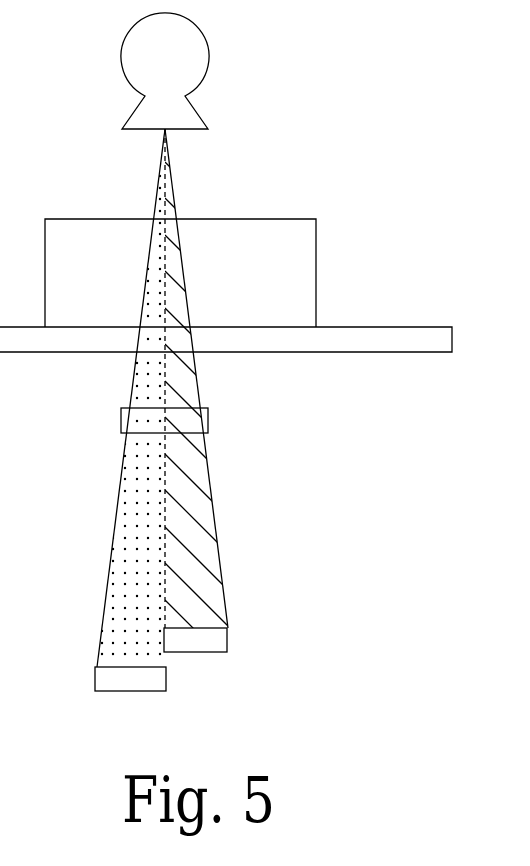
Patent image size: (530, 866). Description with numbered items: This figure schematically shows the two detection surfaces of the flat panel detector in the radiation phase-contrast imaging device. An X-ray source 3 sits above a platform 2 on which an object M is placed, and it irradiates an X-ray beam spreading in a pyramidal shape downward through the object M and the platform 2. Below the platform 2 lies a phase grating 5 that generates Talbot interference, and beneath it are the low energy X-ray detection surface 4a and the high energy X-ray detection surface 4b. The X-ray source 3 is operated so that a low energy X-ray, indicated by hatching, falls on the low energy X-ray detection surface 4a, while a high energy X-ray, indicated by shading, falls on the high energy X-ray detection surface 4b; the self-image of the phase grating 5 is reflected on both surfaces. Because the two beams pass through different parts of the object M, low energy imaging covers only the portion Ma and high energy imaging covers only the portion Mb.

The X-ray source 3 is at (210, 53).
The object M is at (250, 218).
The platform 2 is at (407, 327).
The portion of the object through which the high energy X-ray transmits Mb is at (143, 292).
The portion of the object through which the low energy X-ray transmits Ma is at (175, 301).
The phase grating 5 is at (208, 410).
The low energy X-ray detection surface 4a is at (200, 617).
The high energy X-ray detection surface 4b is at (104, 622).